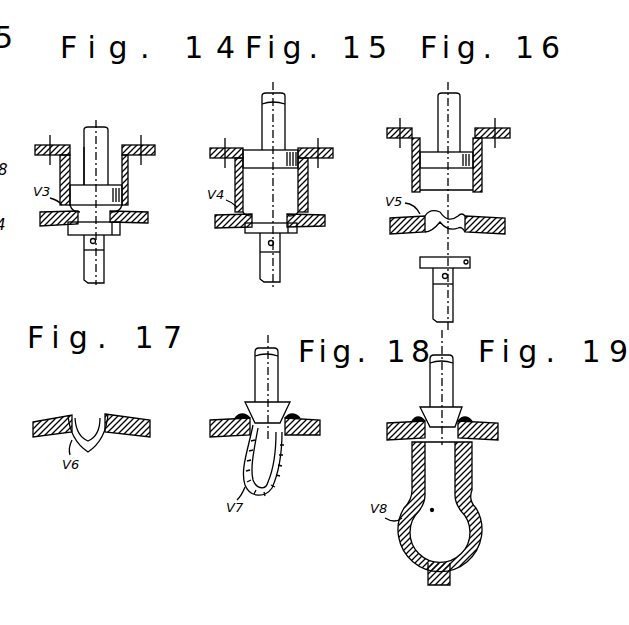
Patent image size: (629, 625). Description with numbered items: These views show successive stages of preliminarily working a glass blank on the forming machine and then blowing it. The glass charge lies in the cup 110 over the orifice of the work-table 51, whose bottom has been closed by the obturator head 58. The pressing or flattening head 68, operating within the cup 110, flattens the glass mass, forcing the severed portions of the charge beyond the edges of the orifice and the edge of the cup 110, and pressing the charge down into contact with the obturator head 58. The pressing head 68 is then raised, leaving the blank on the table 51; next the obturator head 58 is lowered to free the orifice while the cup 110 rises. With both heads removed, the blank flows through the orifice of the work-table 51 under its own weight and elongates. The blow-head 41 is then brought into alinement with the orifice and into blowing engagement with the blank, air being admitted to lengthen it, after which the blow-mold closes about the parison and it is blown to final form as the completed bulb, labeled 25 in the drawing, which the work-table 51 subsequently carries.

In FIG. 14, the cup 110 is at (128, 174).
In FIG. 15, the cup 110 is at (308, 196).
In FIG. 16, the cup 110 is at (484, 186).
In FIG. 14, the pressing or flattening head 68 is at (125, 198).
In FIG. 15, the pressing or flattening head 68 is at (295, 150).
In FIG. 16, the pressing or flattening head 68 is at (478, 160).
In FIG. 14, the work-table 51 is at (148, 220).
In FIG. 15, the work-table 51 is at (325, 224).
In FIG. 16, the work-table 51 is at (505, 226).
In FIG. 17, the work-table 51 is at (150, 428).
In FIG. 18, the work-table 51 is at (320, 432).
In FIG. 19, the work-table 51 is at (498, 432).
In FIG. 14, the obturator head 58 is at (120, 232).
In FIG. 15, the obturator head 58 is at (297, 232).
In FIG. 16, the obturator head 58 is at (472, 262).
In FIG. 18, the blow-head 41 is at (285, 412).
In FIG. 19, the blow-head 41 is at (465, 415).
In FIG. 19, the bulb 25 is at (480, 525).